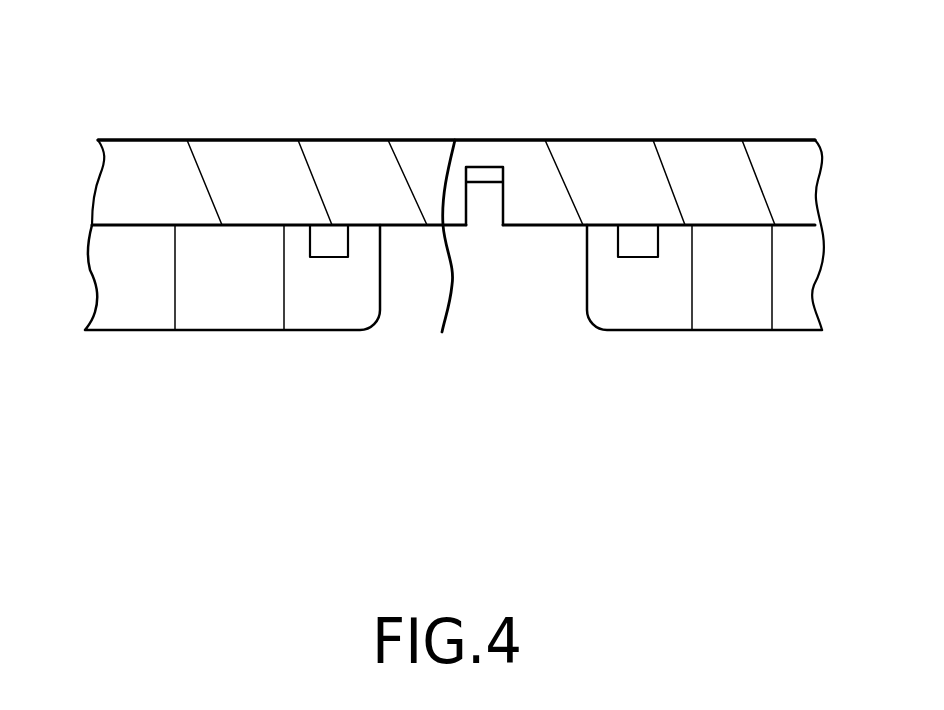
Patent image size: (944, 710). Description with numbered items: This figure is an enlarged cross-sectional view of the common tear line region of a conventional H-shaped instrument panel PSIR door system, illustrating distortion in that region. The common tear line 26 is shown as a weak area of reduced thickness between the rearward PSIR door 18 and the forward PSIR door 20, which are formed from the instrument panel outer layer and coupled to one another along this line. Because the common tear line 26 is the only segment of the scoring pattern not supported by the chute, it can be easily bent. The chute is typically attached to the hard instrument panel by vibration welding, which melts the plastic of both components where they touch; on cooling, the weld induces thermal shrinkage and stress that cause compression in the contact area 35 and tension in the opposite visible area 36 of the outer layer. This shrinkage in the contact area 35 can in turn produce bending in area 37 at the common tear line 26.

The rearward PSIR door 18 is at (653, 178).
The forward PSIR door 20 is at (273, 173).
The common tear line 26 is at (490, 245).
The contact area 35 is at (128, 227).
The visible area 36 is at (133, 140).
The area of bending 37 is at (436, 255).